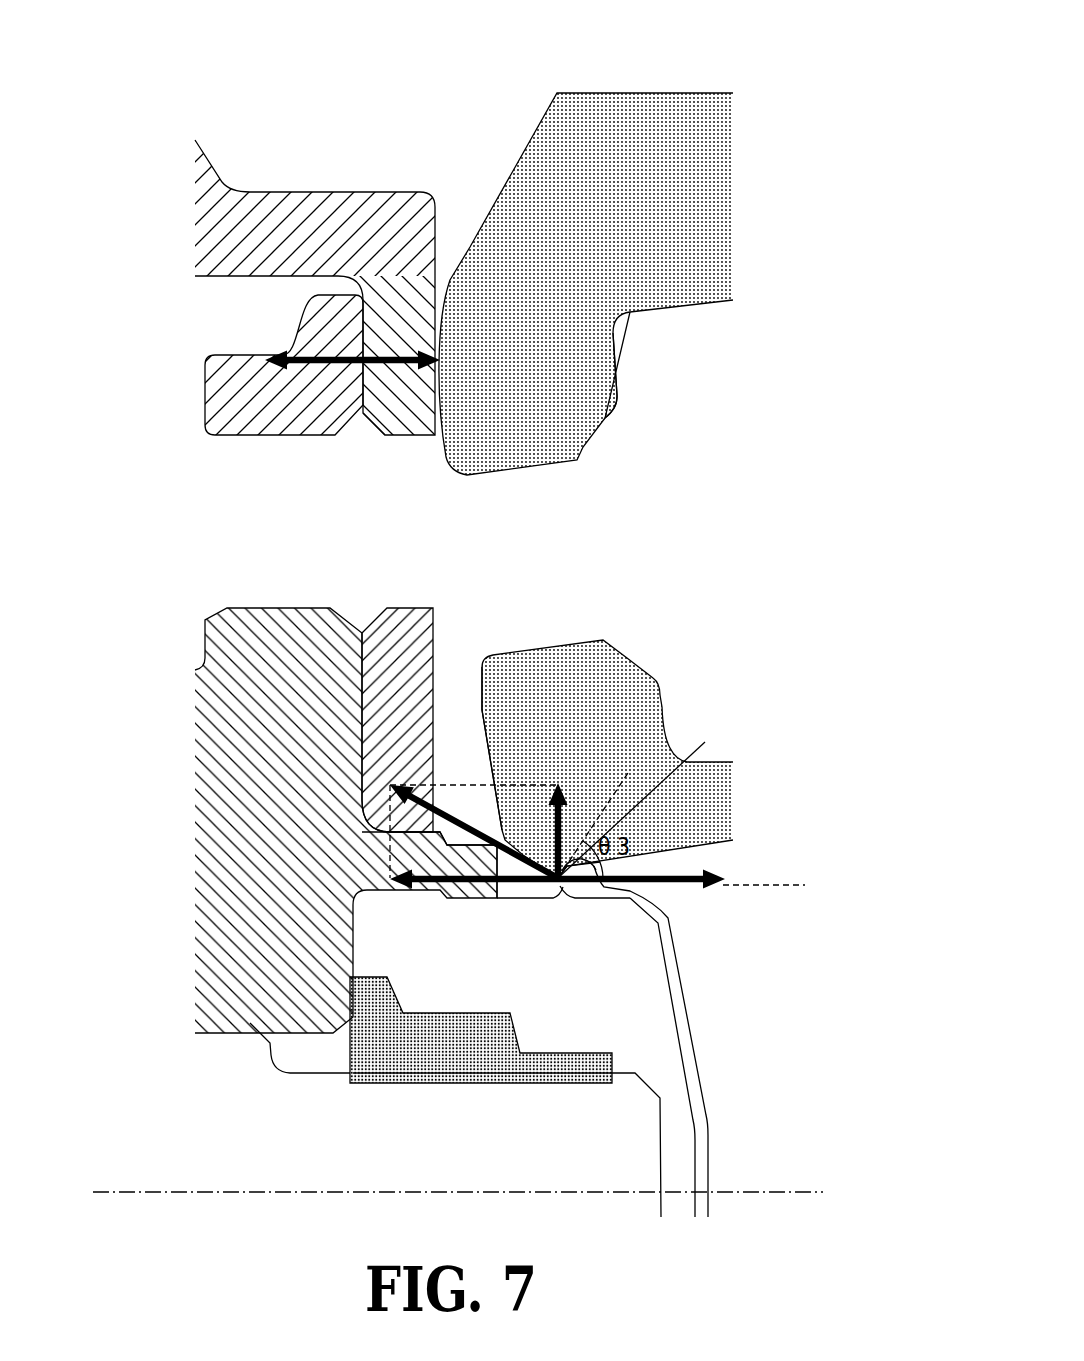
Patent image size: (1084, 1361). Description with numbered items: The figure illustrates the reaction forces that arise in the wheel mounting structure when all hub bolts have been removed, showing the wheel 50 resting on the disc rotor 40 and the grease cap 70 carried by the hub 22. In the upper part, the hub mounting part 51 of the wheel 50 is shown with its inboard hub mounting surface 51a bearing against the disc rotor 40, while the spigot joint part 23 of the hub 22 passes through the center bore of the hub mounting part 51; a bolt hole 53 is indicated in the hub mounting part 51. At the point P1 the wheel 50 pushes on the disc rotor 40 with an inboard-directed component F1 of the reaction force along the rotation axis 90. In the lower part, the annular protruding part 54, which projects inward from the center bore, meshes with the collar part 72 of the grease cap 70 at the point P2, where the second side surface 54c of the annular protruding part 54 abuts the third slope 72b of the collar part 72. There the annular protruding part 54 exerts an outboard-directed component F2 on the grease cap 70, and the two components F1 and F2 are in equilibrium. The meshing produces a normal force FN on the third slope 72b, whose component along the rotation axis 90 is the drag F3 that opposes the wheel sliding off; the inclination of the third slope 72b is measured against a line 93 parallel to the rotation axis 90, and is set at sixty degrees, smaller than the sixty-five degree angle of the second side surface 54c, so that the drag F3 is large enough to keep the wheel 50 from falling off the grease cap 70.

The hub 22 is at (215, 406).
The spigot joint part 23 is at (433, 868).
The disc rotor 40 is at (417, 210).
The wheel 50 is at (717, 57).
The hub mounting part 51 is at (655, 306).
The hub mounting surface 51a is at (478, 700).
The bolt holes 53 is at (546, 557).
The annular protruding part 54 is at (520, 847).
The second side surface 54c is at (592, 868).
The grease cap 70 is at (722, 1068).
The collar part 72 is at (587, 910).
The third slope 72b is at (640, 797).
The rotation axis 90 is at (135, 1195).
The line parallel to the rotation axis 93 is at (778, 885).
The point P1 is at (408, 406).
The point P2 is at (558, 886).
The reaction force component F1 is at (342, 343).
The reaction force component F2 is at (657, 881).
The drag F3 is at (459, 878).
The normal force FN is at (469, 815).